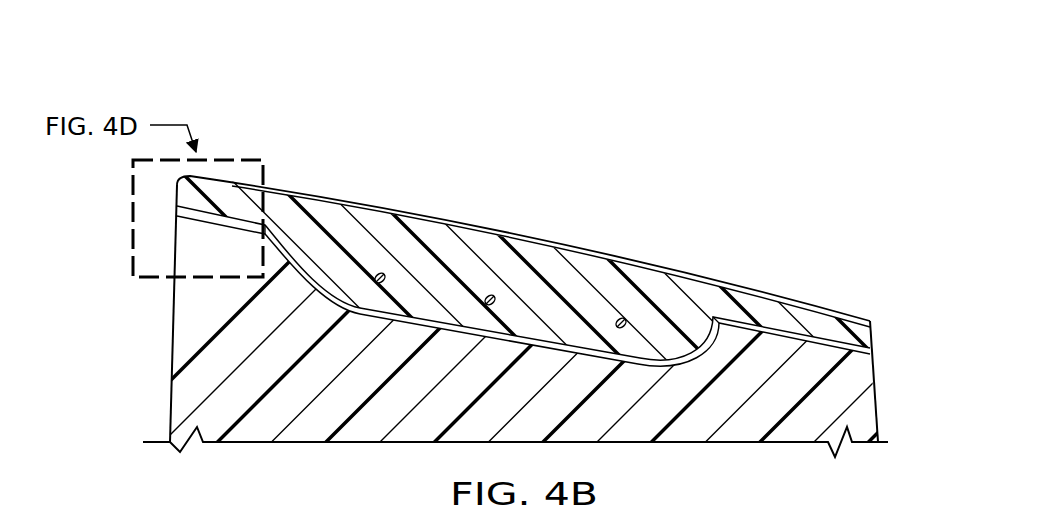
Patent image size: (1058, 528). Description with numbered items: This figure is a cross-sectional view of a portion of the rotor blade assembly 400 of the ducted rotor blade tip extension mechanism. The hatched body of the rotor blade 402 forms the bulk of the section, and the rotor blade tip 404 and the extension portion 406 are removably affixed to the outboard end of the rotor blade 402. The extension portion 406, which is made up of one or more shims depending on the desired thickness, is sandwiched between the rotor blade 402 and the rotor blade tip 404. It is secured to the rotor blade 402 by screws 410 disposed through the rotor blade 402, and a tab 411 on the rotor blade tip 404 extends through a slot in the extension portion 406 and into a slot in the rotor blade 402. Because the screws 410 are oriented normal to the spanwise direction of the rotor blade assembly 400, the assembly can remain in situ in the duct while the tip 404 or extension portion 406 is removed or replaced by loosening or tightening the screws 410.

The rotor blade assembly 400 is at (296, 97).
The rotor blade 402 is at (865, 413).
The rotor blade tip 404 is at (863, 328).
The extension portion 406 is at (790, 332).
The screws 410 is at (378, 271).
The tab 411 is at (556, 308).